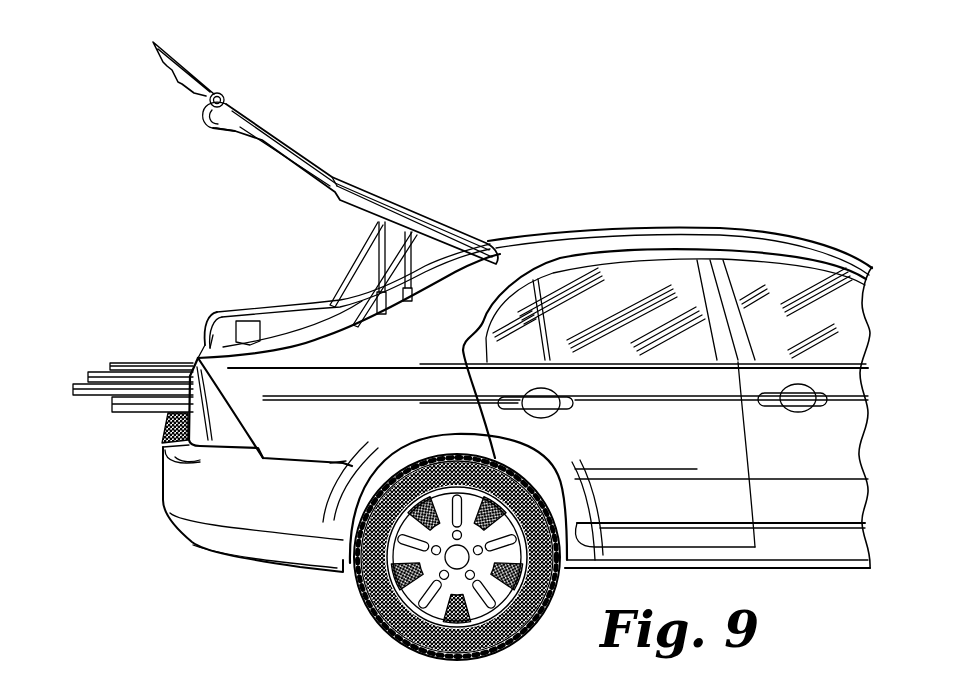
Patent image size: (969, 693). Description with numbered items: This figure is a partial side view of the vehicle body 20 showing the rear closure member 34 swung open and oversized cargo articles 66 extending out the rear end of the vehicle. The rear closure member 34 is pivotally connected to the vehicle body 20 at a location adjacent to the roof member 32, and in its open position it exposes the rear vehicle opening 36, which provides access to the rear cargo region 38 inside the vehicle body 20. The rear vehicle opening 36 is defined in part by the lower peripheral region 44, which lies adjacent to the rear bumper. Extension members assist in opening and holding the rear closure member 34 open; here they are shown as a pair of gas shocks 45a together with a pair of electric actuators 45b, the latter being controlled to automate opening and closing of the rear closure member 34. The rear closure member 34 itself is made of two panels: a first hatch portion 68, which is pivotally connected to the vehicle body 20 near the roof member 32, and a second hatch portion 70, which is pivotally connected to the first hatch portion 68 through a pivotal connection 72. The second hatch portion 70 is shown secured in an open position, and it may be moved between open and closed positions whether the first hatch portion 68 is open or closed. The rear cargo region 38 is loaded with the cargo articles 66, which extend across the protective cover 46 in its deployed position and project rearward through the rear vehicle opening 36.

The vehicle body 20 is at (750, 142).
The roof member 32 is at (558, 226).
The rear closure member 34 is at (308, 90).
The rear vehicle opening 36 is at (220, 313).
The rear cargo region 38 is at (296, 277).
The lower peripheral region 44 is at (163, 447).
The gas shocks 45a is at (340, 285).
The electric actuators 45b is at (418, 243).
The protective cover 46 is at (152, 427).
The cargo articles 66 is at (76, 411).
The first hatch portion 68 is at (390, 230).
The second hatch portion 70 is at (188, 60).
The pivotal connection 72 is at (192, 112).